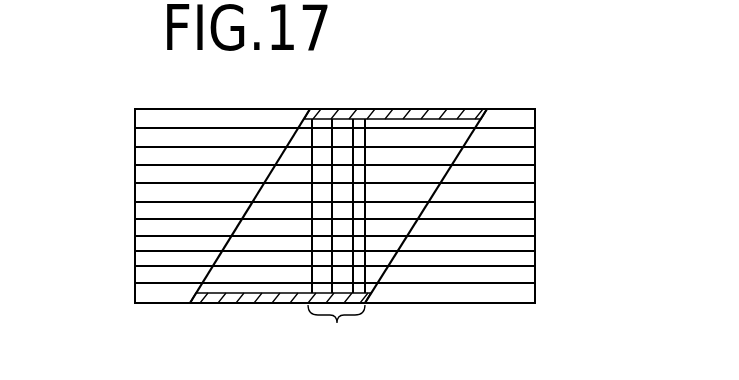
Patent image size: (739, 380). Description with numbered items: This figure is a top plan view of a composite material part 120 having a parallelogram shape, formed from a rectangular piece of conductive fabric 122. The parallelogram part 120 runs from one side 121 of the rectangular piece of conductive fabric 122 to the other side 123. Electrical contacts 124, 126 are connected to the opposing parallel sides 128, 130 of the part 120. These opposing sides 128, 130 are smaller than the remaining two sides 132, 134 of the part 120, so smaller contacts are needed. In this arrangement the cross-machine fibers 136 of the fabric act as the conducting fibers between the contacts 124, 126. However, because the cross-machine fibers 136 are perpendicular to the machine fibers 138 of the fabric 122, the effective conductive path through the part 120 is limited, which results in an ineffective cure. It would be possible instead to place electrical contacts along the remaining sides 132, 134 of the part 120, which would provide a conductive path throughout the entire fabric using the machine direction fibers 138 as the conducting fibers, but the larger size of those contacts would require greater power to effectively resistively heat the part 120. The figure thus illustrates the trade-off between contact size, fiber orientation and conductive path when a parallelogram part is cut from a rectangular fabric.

The composite material part 120 is at (468, 142).
The side of rectangular piece of conductive fabric 121 is at (485, 303).
The rectangular piece of conductive fabric 122 is at (534, 253).
The other side of rectangular piece of conductive fabric 123 is at (488, 108).
The electrical contact 124 is at (218, 303).
The electrical contact 126 is at (333, 109).
The opposing parallel side 128 is at (398, 112).
The opposing parallel side 130 is at (255, 303).
The remaining side 132 is at (413, 228).
The remaining side 134 is at (230, 237).
The cross-machine fibers 136 is at (360, 280).
The machine fibers 138 is at (135, 131).